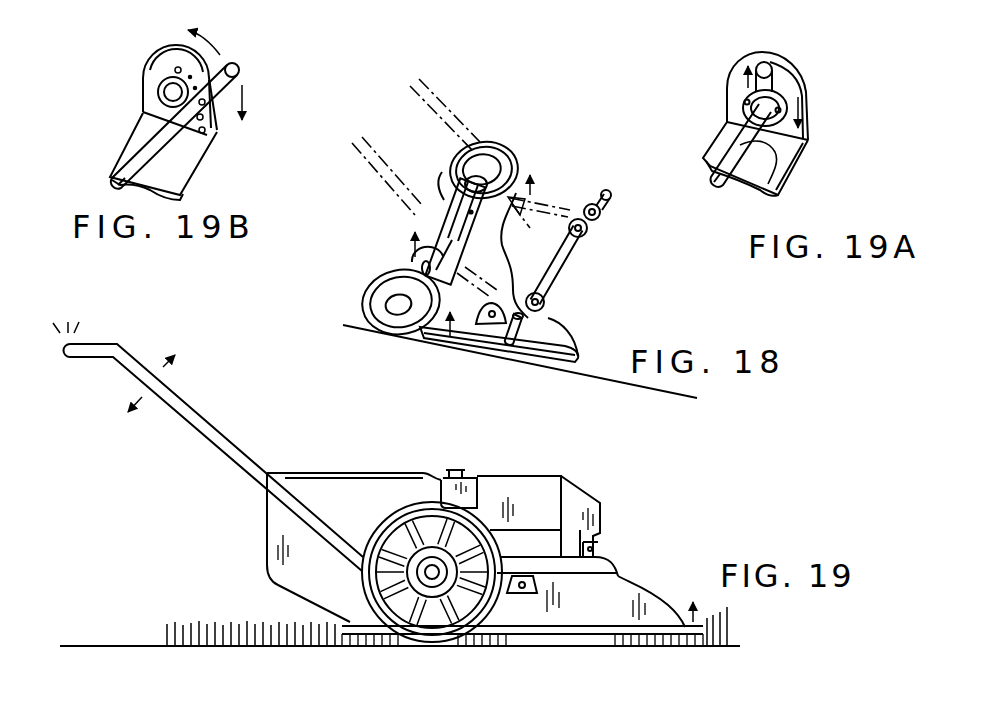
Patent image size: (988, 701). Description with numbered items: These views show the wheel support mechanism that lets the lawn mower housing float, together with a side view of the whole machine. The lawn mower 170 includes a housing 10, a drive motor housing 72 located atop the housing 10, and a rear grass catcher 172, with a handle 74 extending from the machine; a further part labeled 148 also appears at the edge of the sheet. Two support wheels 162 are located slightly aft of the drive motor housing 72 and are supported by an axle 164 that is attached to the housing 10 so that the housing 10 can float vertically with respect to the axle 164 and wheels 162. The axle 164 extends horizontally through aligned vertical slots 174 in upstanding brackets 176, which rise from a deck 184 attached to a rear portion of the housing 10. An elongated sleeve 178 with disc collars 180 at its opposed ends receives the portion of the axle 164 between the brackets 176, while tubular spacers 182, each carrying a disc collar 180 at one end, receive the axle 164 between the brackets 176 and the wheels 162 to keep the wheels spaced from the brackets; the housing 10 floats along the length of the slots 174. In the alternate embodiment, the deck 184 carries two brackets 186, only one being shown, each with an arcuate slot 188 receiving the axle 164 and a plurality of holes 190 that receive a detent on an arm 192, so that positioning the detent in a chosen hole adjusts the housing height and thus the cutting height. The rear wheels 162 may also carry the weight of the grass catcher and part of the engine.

In FIG. 19, the housing 10 is at (633, 580).
In FIG. 19, the drive motor housing 72 is at (557, 477).
In FIG. 18, the handle 74 is at (438, 110).
In FIG. 19, the handle 74 is at (185, 409).
In FIG. 18, the handle bracket 148 is at (447, 0).
In FIG. 18, the support wheels 162 is at (490, 145).
In FIG. 19, the support wheels 162 is at (424, 492).
In FIG. 18, the axle 164 is at (437, 222).
In FIG. 19, the axle 164 is at (433, 572).
In FIG. 19, the lawn mower 170 is at (458, 437).
In FIG. 19, the rear grass catcher 172 is at (305, 472).
In FIG. 19A, the vertical slots 174 is at (771, 67).
In FIG. 19A, the upstanding brackets 176 is at (790, 85).
In FIG. 18, the upstanding brackets 176 is at (515, 175).
In FIG. 19A, the elongated sleeve 178 is at (790, 173).
In FIG. 18, the elongated sleeve 178 is at (560, 272).
In FIG. 19A, the disc collars 180 is at (804, 138).
In FIG. 18, the disc collars 180 is at (588, 230).
In FIG. 18, the tubular spacers 182 is at (598, 203).
In FIG. 19B, the deck 184 is at (180, 173).
In FIG. 19A, the deck 184 is at (783, 183).
In FIG. 18, the deck 184 is at (448, 212).
In FIG. 19B, the brackets 186 is at (160, 62).
In FIG. 19B, the arcuate slot 188 is at (164, 80).
In FIG. 19B, the holes 190 is at (181, 69).
In FIG. 19B, the arm 192 is at (240, 66).